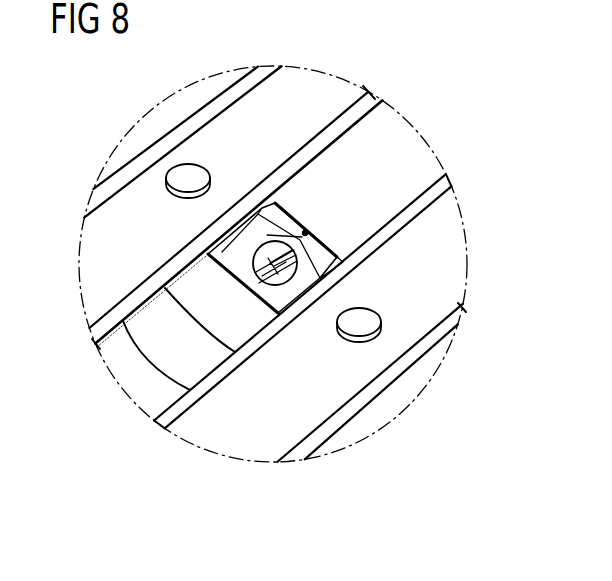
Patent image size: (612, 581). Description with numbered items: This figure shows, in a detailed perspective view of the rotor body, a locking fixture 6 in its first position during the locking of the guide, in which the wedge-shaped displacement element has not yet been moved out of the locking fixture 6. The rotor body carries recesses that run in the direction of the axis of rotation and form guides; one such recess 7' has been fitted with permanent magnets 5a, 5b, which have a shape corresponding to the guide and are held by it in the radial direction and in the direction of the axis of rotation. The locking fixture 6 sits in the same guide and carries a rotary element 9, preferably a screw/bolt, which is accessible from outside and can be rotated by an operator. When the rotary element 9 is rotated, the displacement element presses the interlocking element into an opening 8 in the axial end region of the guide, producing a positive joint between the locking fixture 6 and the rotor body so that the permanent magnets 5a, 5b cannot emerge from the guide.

The recess 7' is at (275, 258).
The locking fixture 6 is at (312, 213).
The rotary element 9 is at (307, 232).
The opening 8 is at (360, 327).
The permanent magnet 5a is at (238, 320).
The permanent magnet 5b is at (198, 352).